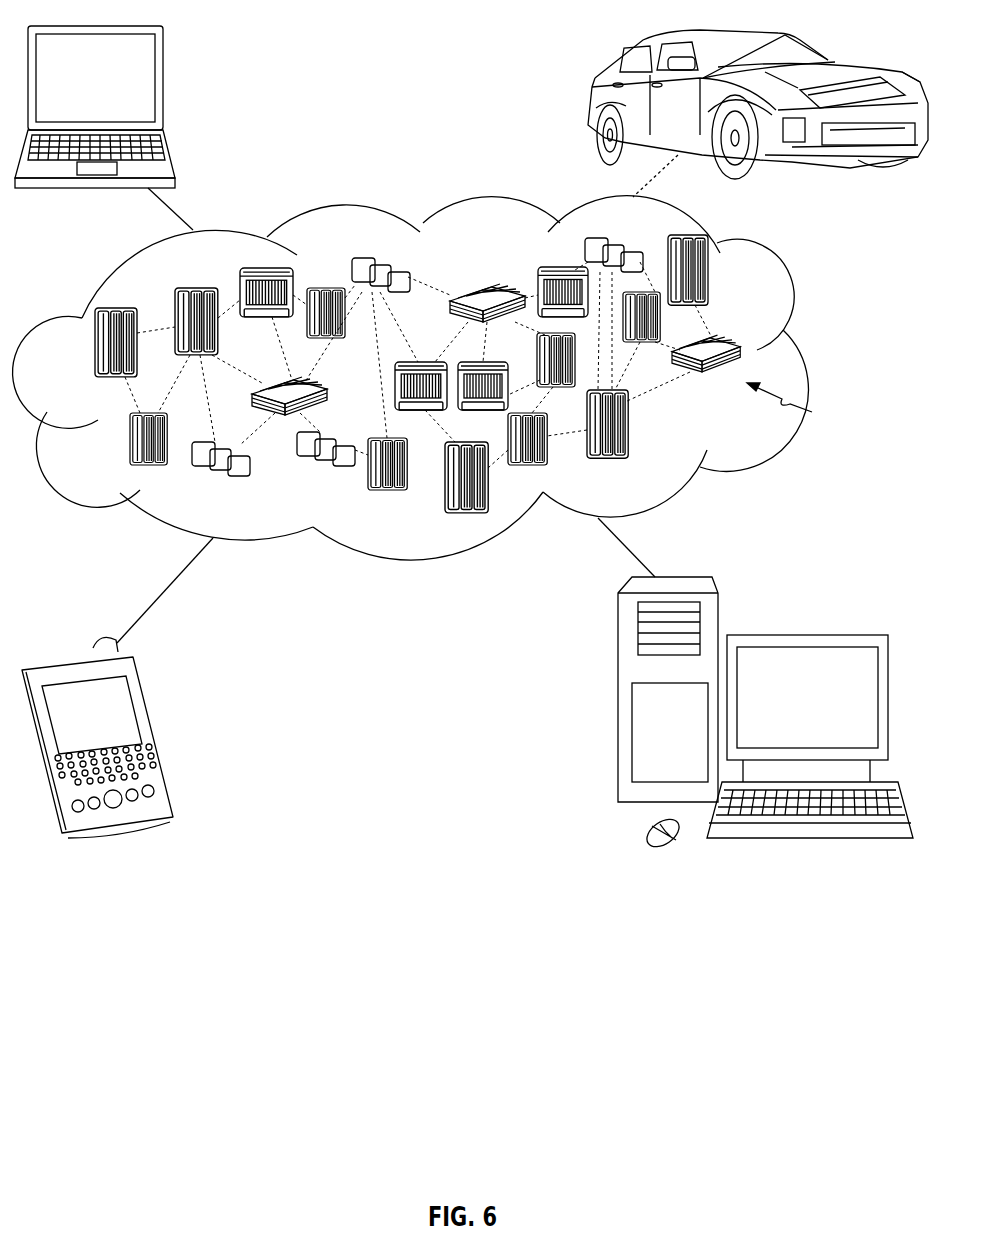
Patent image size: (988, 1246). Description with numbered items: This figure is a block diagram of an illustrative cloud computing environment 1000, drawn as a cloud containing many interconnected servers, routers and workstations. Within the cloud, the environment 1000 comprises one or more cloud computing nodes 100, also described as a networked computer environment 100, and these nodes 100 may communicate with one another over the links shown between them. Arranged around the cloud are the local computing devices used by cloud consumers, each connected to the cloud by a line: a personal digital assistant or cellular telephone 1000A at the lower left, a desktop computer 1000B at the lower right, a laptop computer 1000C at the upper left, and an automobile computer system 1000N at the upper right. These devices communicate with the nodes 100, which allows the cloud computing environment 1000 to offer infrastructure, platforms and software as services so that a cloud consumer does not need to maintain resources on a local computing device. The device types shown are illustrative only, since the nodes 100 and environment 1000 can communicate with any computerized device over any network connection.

The laptop computer 1000C is at (165, 88).
The automobile computer system 1000N is at (590, 100).
The cloud computing environment 1000 is at (803, 355).
The cloud computing nodes 100 is at (798, 405).
The personal digital assistant or cellular telephone 1000A is at (155, 727).
The desktop computer 1000B is at (815, 610).